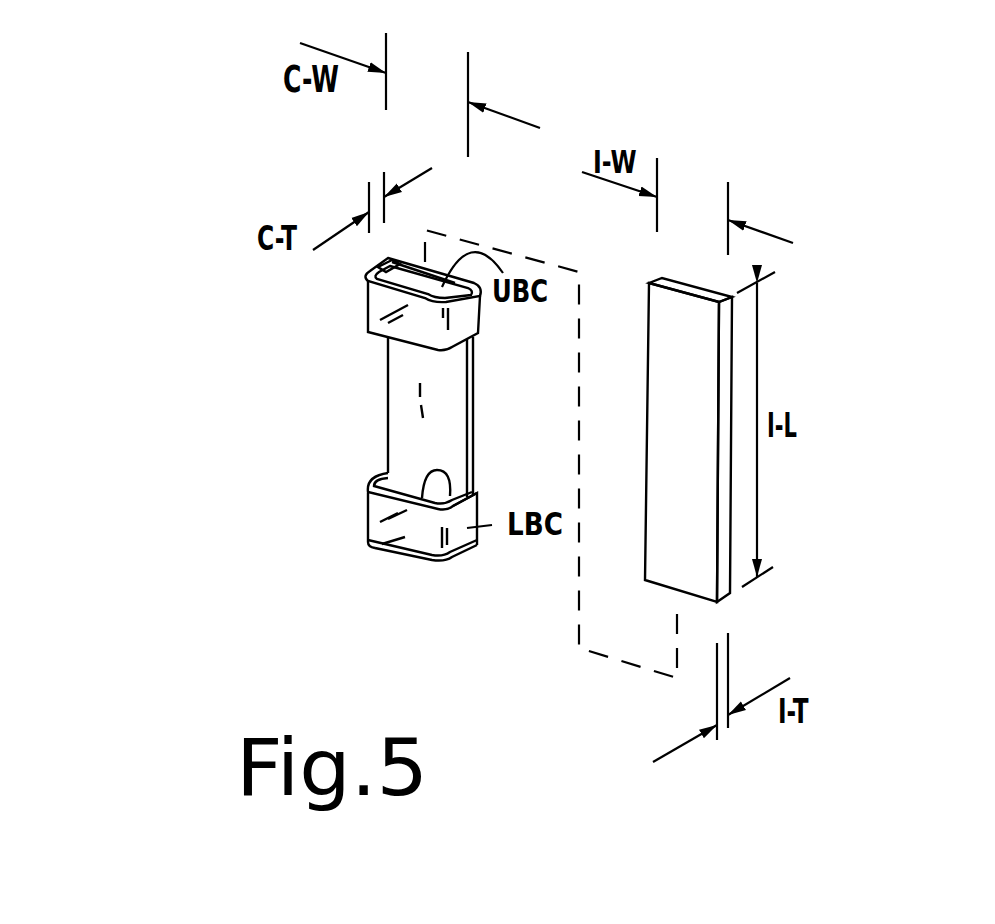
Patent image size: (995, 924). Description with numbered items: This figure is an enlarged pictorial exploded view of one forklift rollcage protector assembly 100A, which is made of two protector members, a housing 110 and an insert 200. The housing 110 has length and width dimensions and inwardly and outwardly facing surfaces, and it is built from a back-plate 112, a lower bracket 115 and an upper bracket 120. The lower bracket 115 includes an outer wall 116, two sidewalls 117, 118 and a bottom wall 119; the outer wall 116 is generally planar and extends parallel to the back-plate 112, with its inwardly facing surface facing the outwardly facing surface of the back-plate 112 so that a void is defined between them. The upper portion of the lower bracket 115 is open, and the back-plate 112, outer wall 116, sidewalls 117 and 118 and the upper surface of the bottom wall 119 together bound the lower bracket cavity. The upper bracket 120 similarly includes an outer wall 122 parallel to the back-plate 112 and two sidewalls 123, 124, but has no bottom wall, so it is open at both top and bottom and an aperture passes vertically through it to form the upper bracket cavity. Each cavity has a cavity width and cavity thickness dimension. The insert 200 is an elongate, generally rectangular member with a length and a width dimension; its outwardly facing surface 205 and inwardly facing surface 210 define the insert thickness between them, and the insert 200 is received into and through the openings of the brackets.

The rollcage protector assembly 100A is at (272, 190).
The housing 110 is at (385, 400).
The back-plate 112 is at (474, 427).
The upper bracket 120 is at (382, 344).
The sidewall 124 is at (370, 302).
The sidewall 123 is at (465, 312).
The outer wall 122 is at (422, 327).
The lower bracket 115 is at (372, 584).
The sidewall 118 is at (367, 507).
The sidewall 117 is at (480, 526).
The outer wall 116 is at (370, 547).
The bottom wall 119 is at (413, 558).
The insert 200 is at (654, 414).
The outwardly facing surface 205 is at (670, 328).
The inwardly facing surface 210 is at (710, 277).